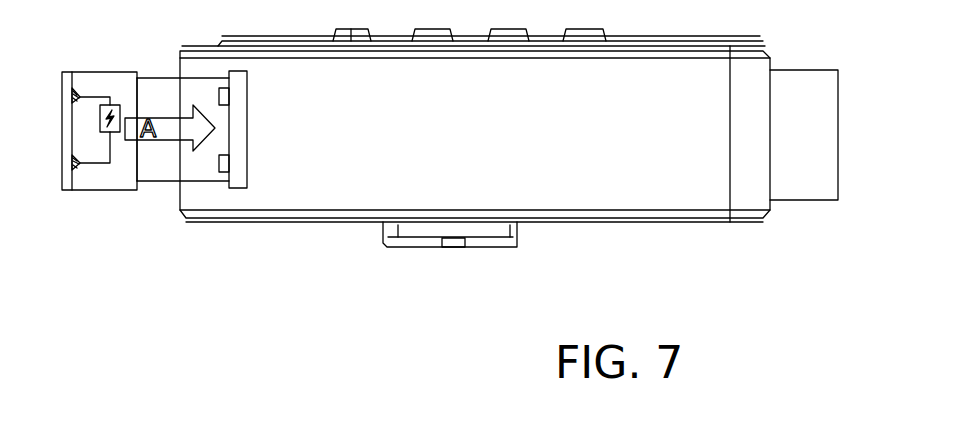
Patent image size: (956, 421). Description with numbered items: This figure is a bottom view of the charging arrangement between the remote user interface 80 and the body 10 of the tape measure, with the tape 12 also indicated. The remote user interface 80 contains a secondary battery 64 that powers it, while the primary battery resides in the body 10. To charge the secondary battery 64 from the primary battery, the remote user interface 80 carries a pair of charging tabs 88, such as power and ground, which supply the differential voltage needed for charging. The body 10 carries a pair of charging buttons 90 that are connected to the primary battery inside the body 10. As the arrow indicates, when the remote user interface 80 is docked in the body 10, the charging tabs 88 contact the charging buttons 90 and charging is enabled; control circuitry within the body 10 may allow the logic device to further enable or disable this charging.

The body 10 is at (478, 149).
The tape 12 is at (168, 181).
The secondary battery 64 is at (118, 103).
The remote user interface 80 is at (80, 190).
The charging tabs 88 is at (76, 96).
The charging buttons 90 is at (227, 100).